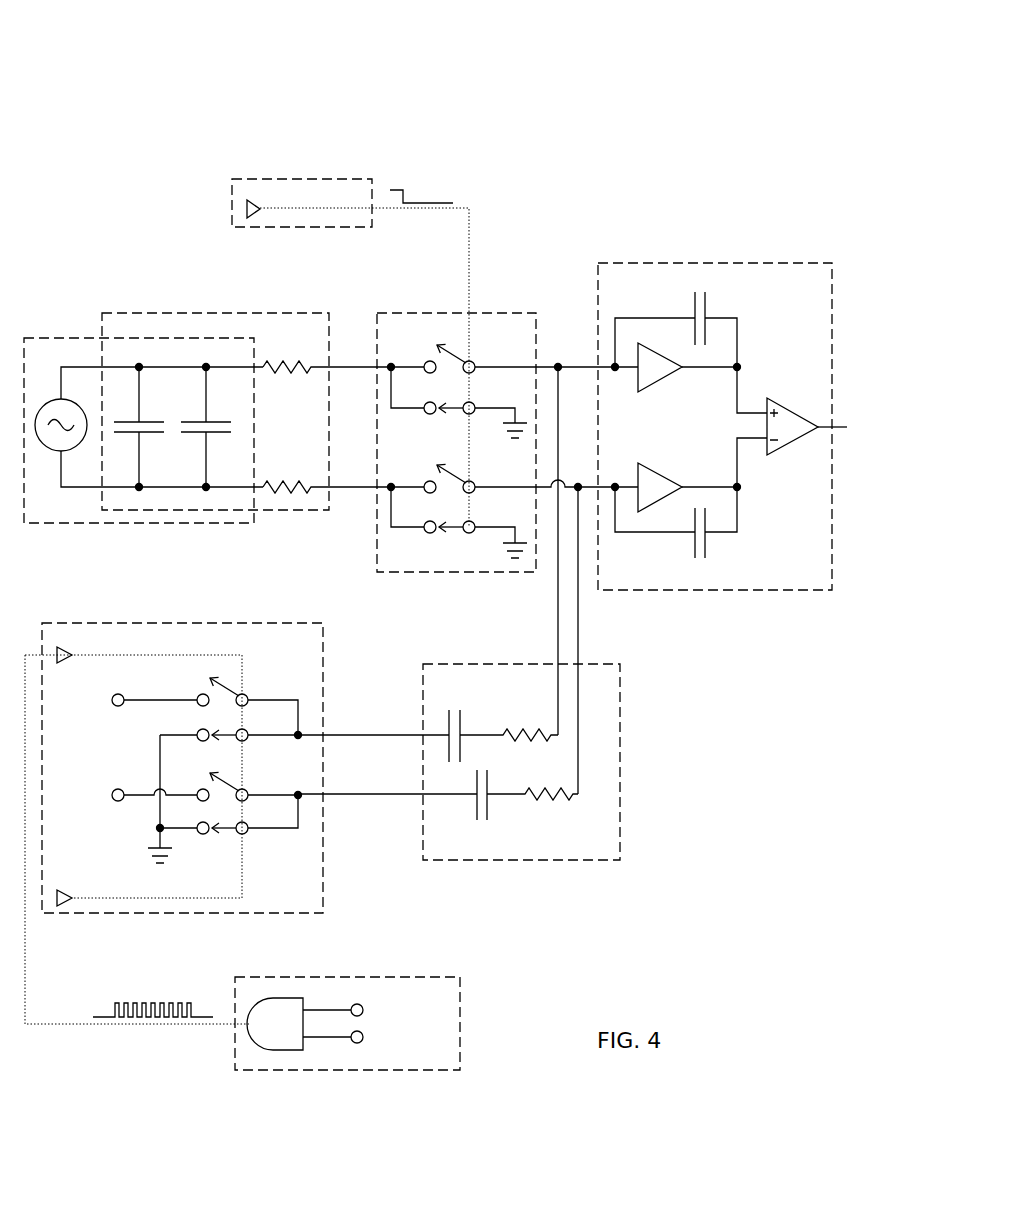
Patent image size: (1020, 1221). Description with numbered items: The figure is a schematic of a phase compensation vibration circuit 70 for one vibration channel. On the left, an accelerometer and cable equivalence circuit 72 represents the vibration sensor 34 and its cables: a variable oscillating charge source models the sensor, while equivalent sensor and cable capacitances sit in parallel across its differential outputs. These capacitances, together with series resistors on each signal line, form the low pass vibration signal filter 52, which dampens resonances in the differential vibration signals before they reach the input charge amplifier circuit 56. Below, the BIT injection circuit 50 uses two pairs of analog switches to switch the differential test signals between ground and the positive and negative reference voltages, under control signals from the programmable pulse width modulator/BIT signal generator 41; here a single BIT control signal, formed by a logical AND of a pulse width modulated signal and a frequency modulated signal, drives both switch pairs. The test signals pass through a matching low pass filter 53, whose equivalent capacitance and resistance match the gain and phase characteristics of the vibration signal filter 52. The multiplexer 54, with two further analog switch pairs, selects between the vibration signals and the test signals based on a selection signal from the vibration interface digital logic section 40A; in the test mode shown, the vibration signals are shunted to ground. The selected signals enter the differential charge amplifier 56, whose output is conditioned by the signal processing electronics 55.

The phase compensation vibration circuit 70 is at (104, 57).
The vibration interface digital logic section 40A is at (347, 177).
The accelerometer and cable equivalence circuit 72 is at (77, 335).
The vibration sensor 34 is at (50, 400).
The low pass vibration signal filter 52 is at (126, 310).
The multiplexer 54 is at (400, 312).
The input charge amplifier circuit 56 is at (623, 262).
The signal processing electronics 55 is at (855, 427).
The BIT injection circuit 50 is at (88, 622).
The matching low pass filter 53 is at (448, 662).
The programmable pulse width modulator/BIT signal generator 41 is at (405, 975).